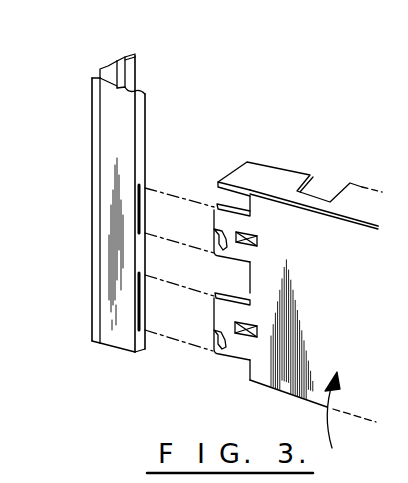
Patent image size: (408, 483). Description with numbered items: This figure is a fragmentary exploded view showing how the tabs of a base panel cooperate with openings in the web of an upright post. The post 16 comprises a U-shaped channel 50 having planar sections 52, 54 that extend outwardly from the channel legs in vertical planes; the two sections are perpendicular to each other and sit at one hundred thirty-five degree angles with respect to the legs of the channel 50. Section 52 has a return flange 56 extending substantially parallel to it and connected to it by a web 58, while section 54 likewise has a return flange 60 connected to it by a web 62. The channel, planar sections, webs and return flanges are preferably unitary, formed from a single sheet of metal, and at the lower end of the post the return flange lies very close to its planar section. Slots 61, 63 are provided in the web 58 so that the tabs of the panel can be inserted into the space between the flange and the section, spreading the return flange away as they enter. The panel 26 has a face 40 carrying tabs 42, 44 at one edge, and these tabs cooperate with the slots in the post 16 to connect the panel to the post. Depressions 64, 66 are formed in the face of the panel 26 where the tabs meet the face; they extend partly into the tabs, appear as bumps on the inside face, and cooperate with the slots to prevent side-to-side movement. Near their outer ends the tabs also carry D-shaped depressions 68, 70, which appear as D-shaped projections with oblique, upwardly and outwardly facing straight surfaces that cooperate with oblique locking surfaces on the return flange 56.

The post 16 is at (78, 106).
The panel 26 is at (367, 463).
The face 40 is at (345, 263).
The tab 42 is at (238, 360).
The tab 44 is at (215, 198).
The U-shaped channel 50 is at (92, 89).
The planar section 52 is at (120, 118).
The planar section 54 is at (117, 63).
The return flange 56 is at (142, 90).
The web 58 is at (147, 106).
The return flange 60 is at (133, 68).
The slot 61 is at (141, 184).
The web 62 is at (127, 56).
The slot 63 is at (143, 313).
The depression 64 is at (241, 233).
The depression 66 is at (256, 330).
The depression 68 is at (214, 230).
The depression 70 is at (214, 348).